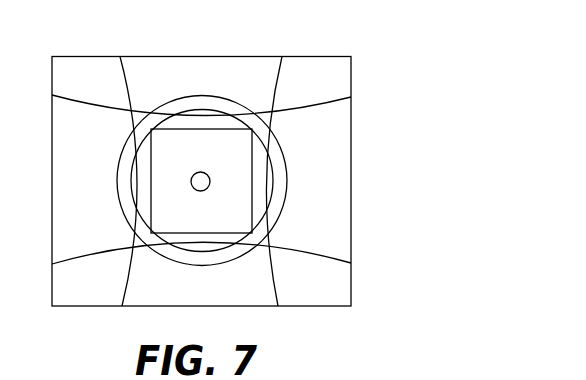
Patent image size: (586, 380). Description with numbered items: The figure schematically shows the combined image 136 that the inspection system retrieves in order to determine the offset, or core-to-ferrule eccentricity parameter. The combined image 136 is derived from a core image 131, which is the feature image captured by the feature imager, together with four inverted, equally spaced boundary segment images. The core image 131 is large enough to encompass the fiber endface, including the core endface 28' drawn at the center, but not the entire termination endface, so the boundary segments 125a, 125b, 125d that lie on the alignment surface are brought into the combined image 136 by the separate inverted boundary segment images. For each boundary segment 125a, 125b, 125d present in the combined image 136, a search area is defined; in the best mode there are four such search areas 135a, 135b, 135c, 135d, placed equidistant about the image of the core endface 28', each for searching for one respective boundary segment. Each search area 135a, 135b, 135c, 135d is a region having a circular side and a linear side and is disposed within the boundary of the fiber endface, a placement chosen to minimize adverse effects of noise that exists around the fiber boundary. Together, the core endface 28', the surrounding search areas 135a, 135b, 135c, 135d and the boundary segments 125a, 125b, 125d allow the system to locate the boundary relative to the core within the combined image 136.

The feature image 131 is at (312, 56).
The boundary segment 125a is at (270, 209).
The boundary segment 125b is at (293, 250).
The boundary segment 125d is at (322, 107).
The search area 135a is at (129, 193).
The search area 135b is at (177, 112).
The search area 135c is at (274, 193).
The search area 135d is at (178, 248).
The core endface 28' is at (201, 181).
The combined image 136 is at (397, 155).